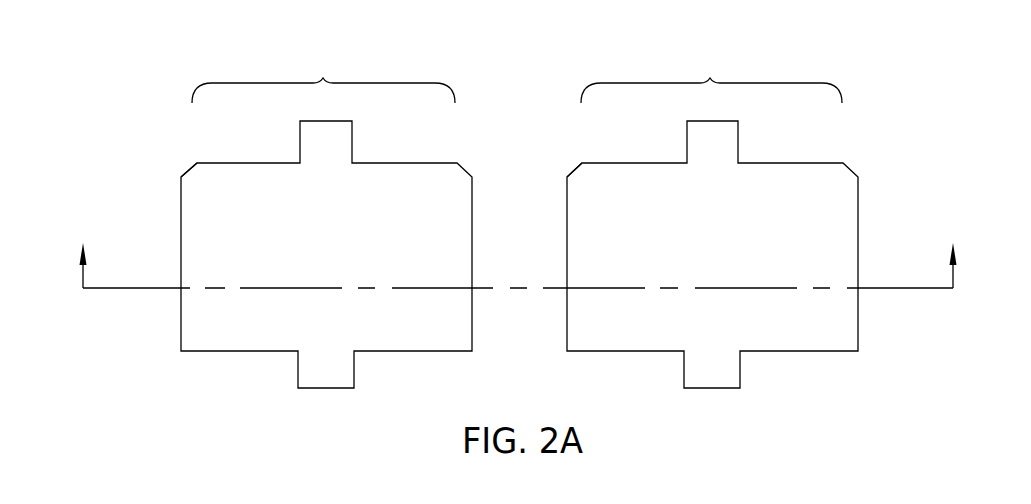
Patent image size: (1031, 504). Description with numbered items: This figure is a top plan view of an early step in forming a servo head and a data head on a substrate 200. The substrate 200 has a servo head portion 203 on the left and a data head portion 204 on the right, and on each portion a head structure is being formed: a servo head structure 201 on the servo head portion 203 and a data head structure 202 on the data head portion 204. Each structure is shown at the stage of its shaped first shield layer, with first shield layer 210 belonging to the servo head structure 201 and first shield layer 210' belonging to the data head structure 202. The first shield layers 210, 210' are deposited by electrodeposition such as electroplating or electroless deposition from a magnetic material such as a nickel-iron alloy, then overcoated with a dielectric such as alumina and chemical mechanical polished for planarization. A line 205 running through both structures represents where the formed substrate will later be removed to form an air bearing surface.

The substrate 200 is at (924, 130).
The servo head structure 201 is at (134, 328).
The data head structure 202 is at (892, 335).
The servo head portion 203 is at (323, 77).
The data head portion 204 is at (711, 77).
The line 205 is at (100, 288).
The first shield layer 210 is at (163, 147).
The first shield layer 210' is at (548, 147).